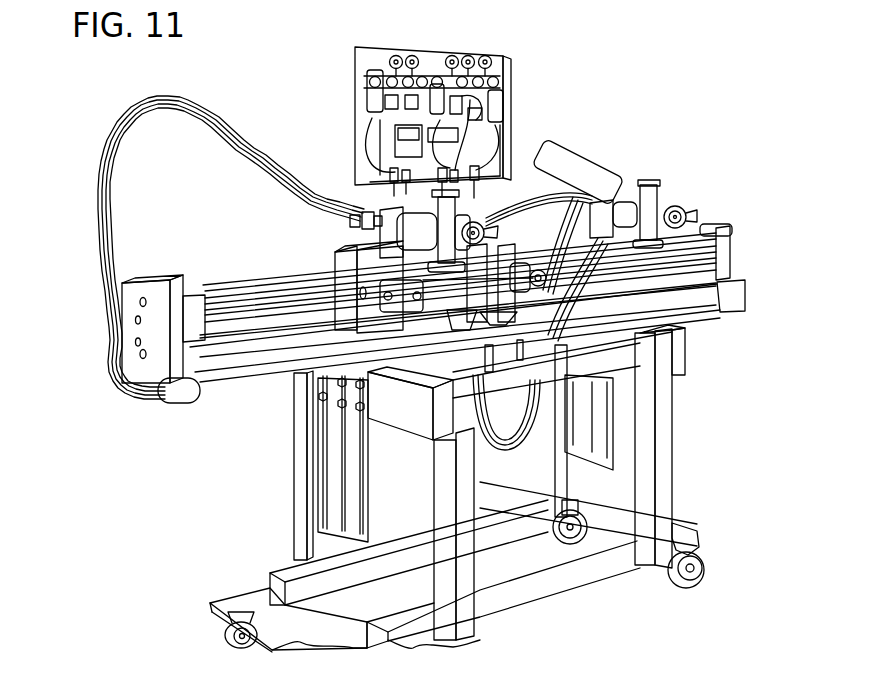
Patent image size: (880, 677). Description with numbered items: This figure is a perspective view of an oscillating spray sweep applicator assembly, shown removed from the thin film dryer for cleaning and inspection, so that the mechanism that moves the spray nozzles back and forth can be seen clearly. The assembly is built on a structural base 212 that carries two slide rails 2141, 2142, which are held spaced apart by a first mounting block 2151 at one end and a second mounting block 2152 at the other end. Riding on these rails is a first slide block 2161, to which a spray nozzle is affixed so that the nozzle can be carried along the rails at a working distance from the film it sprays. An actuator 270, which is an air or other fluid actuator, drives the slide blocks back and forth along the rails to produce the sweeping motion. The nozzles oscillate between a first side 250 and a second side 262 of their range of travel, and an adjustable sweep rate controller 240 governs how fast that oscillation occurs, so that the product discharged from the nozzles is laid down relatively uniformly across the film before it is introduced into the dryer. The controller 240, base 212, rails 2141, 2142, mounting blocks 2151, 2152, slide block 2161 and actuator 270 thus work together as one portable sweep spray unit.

The adjustable sweep rate controller 240 is at (498, 64).
The first side of range of travel 250 is at (110, 390).
The first mounting block 2151 is at (160, 373).
The second mounting block 2152 is at (722, 255).
The first slide rail 2141 is at (310, 329).
The second slide rail 2142 is at (145, 277).
The first slide block 2161 is at (387, 320).
The structural base 212 is at (736, 297).
The second side of range of travel 262 is at (728, 228).
The actuator 270 is at (610, 262).